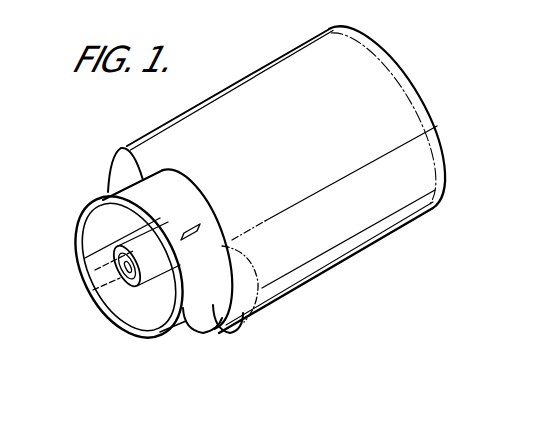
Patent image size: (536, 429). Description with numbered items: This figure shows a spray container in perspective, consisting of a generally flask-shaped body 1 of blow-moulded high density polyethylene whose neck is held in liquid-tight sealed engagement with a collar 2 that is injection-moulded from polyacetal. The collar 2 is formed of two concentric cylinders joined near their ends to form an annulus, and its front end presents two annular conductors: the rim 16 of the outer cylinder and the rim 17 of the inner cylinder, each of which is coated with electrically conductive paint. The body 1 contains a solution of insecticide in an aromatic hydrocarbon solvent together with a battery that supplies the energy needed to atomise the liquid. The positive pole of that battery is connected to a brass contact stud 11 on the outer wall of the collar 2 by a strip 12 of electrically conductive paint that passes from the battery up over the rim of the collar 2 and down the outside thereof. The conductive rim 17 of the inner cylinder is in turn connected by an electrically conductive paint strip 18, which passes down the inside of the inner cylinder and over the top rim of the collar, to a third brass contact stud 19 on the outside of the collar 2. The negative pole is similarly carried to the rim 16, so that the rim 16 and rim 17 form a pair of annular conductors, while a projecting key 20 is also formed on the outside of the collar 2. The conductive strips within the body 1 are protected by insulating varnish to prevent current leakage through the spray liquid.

The body 1 is at (247, 86).
The collar 2 is at (222, 246).
The brass contact stud 11 is at (130, 185).
The strip of electrically conductive paint 12 is at (138, 151).
The rim of the outer cylinder 16 is at (134, 332).
The rim of the inner cylinder 17 is at (117, 280).
The electrically conductive paint strip 18 is at (238, 318).
The third brass contact stud 19 is at (196, 322).
The projecting key 20 is at (189, 228).